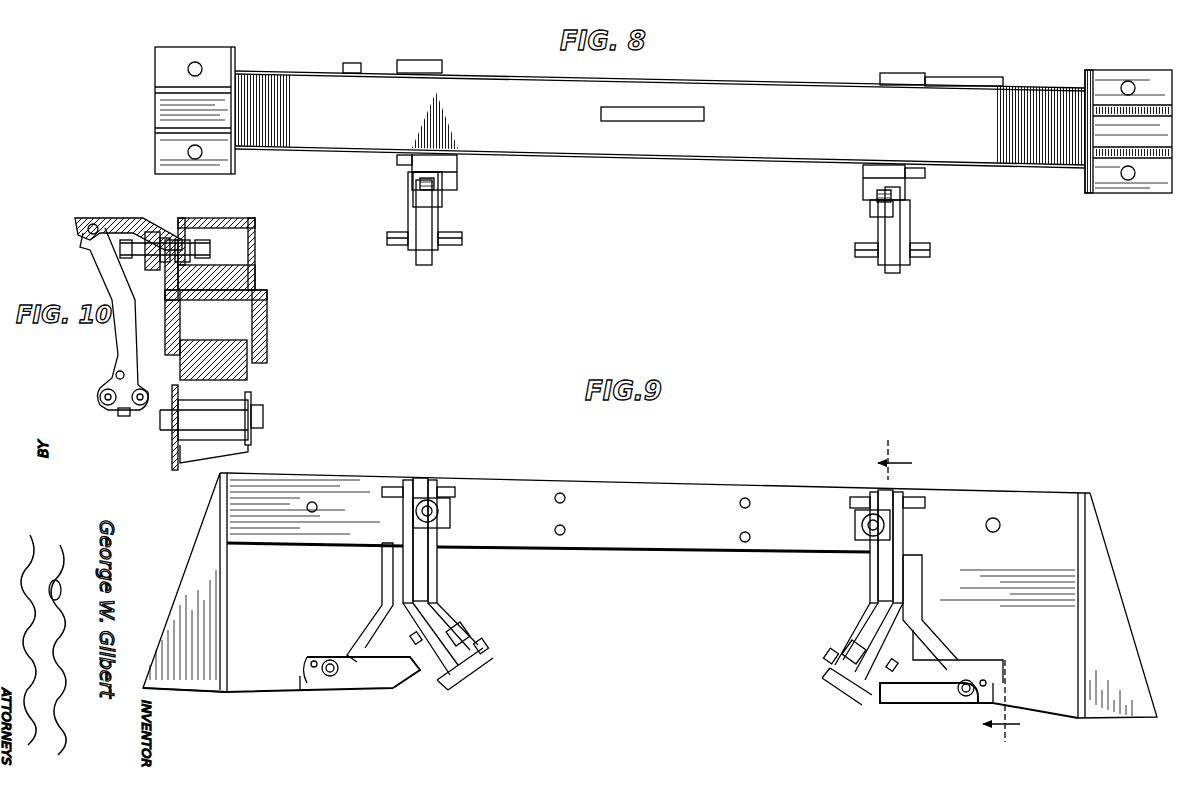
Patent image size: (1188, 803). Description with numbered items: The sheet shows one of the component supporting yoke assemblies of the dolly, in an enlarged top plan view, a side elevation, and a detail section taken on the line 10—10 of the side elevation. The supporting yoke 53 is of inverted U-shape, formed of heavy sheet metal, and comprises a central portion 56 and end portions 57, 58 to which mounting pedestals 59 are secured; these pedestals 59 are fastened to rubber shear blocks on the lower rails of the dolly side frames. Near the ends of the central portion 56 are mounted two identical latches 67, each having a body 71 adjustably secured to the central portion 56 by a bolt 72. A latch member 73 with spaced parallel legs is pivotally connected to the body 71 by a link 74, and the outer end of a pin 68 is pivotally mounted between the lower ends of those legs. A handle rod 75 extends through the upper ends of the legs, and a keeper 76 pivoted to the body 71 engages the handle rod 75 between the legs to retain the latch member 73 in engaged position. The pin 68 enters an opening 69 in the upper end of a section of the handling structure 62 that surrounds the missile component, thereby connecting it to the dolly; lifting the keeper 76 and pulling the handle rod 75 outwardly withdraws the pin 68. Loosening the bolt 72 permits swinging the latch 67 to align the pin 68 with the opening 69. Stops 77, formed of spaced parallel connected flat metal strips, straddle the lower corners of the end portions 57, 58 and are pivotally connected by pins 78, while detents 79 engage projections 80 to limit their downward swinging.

In FIG. 8, the supporting yoke 53 is at (746, 100).
In FIG. 9, the supporting yoke 53 is at (762, 482).
In FIG. 10, the supporting yoke 53 is at (258, 228).
In FIG. 9, the central portion 56 is at (656, 477).
In FIG. 10, the central portion 56 is at (212, 218).
In FIG. 9, the end portion 57 is at (282, 672).
In FIG. 10, the end portion 57 is at (246, 451).
In FIG. 9, the end portion 58 is at (992, 500).
In FIG. 8, the mounting pedestal 59 is at (200, 47).
In FIG. 9, the mounting pedestal 59 is at (195, 570).
In FIG. 10, the structure 62 is at (201, 338).
In FIG. 8, the latch 67 is at (447, 252).
In FIG. 9, the latch 67 is at (441, 478).
In FIG. 10, the latch 67 is at (112, 287).
In FIG. 9, the pin 68 is at (432, 612).
In FIG. 10, the pin 68 is at (197, 372).
In FIG. 10, the opening 69 is at (213, 362).
In FIG. 8, the body 71 is at (457, 165).
In FIG. 9, the body 71 is at (413, 518).
In FIG. 10, the body 71 is at (147, 330).
In FIG. 8, the bolt 72 is at (441, 198).
In FIG. 9, the bolt 72 is at (450, 516).
In FIG. 10, the bolt 72 is at (145, 240).
In FIG. 8, the latch member 73 is at (408, 222).
In FIG. 9, the latch member 73 is at (438, 572).
In FIG. 10, the latch member 73 is at (107, 262).
In FIG. 9, the link 74 is at (460, 630).
In FIG. 10, the link 74 is at (123, 408).
In FIG. 8, the handle rod 75 is at (460, 238).
In FIG. 9, the handle rod 75 is at (457, 492).
In FIG. 10, the handle rod 75 is at (92, 224).
In FIG. 8, the keeper 76 is at (425, 228).
In FIG. 9, the keeper 76 is at (420, 478).
In FIG. 10, the keeper 76 is at (110, 218).
In FIG. 9, the stop 77 is at (378, 676).
In FIG. 10, the stop 77 is at (258, 428).
In FIG. 9, the pin 78 is at (330, 660).
In FIG. 10, the pin 78 is at (263, 412).
In FIG. 9, the detent 79 is at (312, 661).
In FIG. 10, the detent 79 is at (252, 398).
In FIG. 9, the projection 80 is at (1030, 693).
In FIG. 10, the projection 80 is at (176, 430).
In FIG. 9, the section line 10 is at (962, 590).